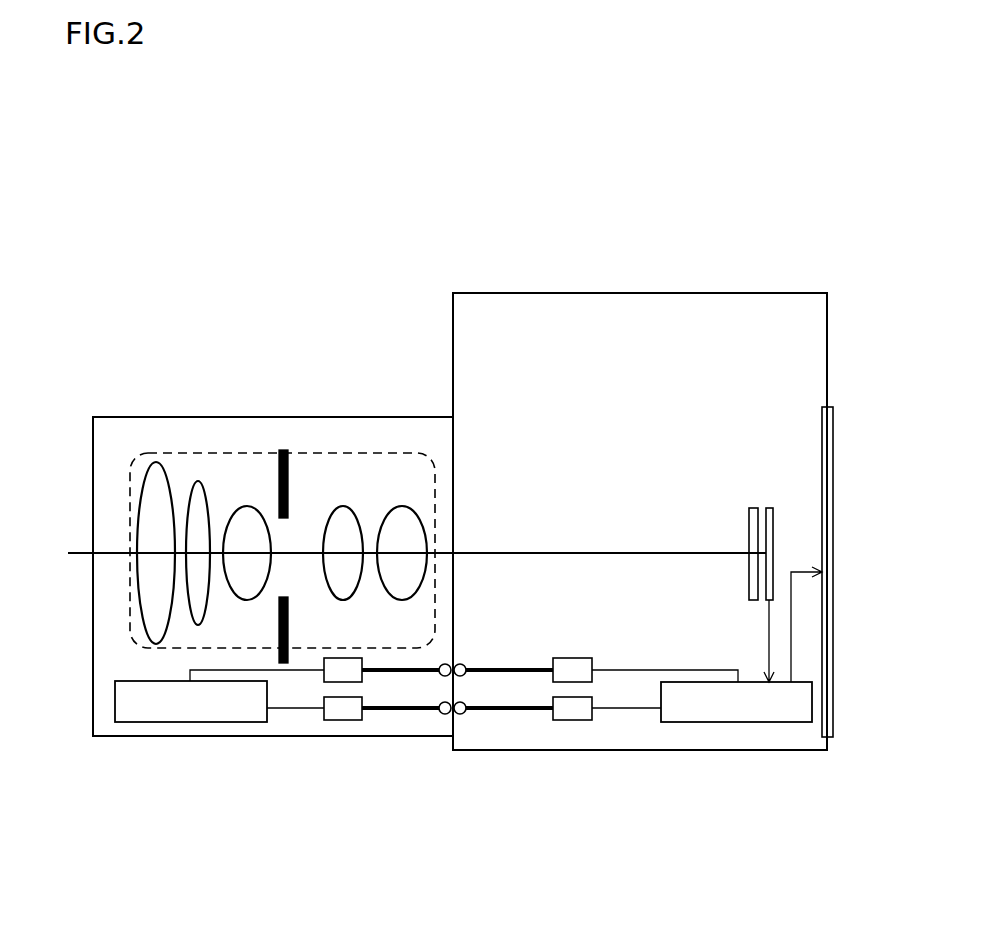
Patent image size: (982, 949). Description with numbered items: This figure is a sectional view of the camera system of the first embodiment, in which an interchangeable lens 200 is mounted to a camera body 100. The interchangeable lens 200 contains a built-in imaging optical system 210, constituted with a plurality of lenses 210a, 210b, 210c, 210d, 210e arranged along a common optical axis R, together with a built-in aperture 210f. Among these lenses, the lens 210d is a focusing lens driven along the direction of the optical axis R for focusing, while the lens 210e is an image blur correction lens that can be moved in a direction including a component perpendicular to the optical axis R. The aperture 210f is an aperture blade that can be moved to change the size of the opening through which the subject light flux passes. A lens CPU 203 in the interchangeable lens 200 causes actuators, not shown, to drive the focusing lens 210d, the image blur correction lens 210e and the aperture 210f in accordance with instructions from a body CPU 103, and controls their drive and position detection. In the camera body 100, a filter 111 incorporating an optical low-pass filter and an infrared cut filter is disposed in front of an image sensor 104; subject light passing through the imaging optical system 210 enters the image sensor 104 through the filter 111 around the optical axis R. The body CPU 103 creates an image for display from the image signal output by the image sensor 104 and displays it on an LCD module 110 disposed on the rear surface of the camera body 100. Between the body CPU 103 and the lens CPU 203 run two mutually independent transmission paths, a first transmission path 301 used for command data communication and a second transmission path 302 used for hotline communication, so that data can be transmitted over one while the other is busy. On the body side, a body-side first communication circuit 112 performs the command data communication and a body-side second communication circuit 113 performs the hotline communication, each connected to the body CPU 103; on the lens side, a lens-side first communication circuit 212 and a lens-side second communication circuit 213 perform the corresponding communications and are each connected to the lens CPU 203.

The camera body 100 is at (657, 293).
The interchangeable lens 200 is at (437, 415).
The imaging optical system 210 is at (130, 612).
The lens 210a is at (153, 462).
The lens 210b is at (199, 482).
The lens 210c is at (249, 507).
The focusing lens 210d is at (345, 507).
The image blur correction lens 210e is at (400, 507).
The aperture 210f is at (288, 482).
The lens-side first communication circuit 212 is at (345, 659).
The lens-side second communication circuit 213 is at (342, 721).
The lens CPU 203 is at (193, 722).
The first transmission path 301 is at (413, 668).
The second transmission path 302 is at (390, 712).
The body-side first communication circuit 112 is at (572, 658).
The body-side second communication circuit 113 is at (580, 722).
The body CPU 103 is at (738, 722).
The filter 111 is at (752, 508).
The image sensor 104 is at (768, 508).
The LCD module 110 is at (822, 440).
The optical axis R is at (497, 553).